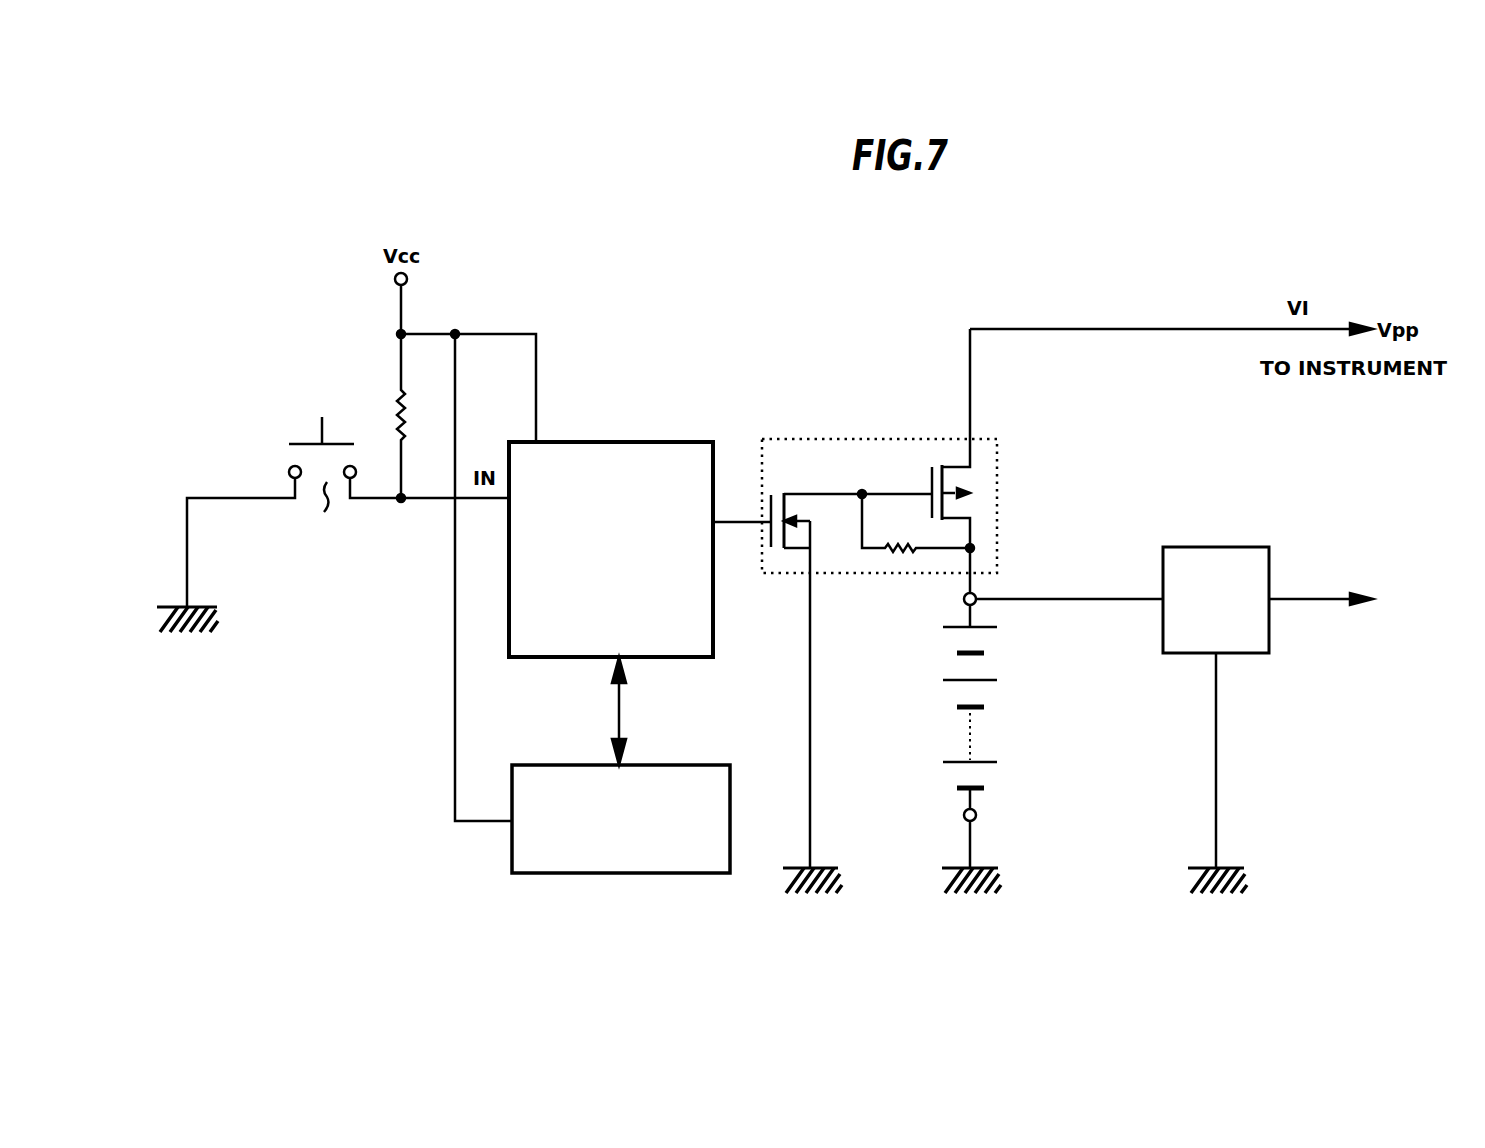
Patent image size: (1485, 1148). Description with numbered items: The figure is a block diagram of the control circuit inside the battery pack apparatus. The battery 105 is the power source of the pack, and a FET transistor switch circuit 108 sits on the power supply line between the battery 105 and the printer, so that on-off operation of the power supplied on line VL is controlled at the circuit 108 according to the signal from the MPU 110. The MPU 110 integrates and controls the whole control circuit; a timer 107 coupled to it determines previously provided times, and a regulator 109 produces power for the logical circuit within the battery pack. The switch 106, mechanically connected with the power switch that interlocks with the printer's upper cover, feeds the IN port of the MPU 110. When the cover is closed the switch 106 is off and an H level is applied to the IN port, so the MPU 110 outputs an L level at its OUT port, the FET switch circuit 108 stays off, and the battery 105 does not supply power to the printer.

The battery 105 is at (1052, 720).
The switch 106 is at (333, 511).
The timer 107 is at (669, 765).
The FET transistor switch circuit 108 is at (873, 437).
The regulator 109 is at (1200, 547).
The MPU 110 is at (651, 441).